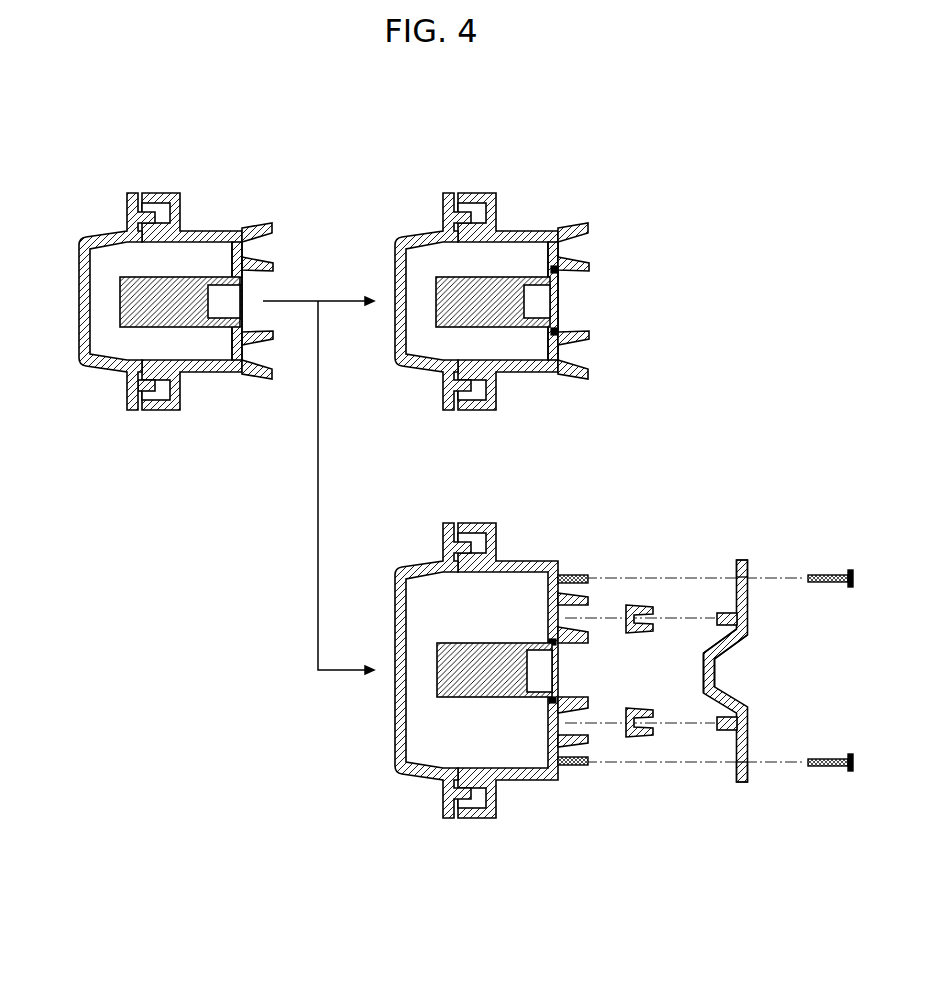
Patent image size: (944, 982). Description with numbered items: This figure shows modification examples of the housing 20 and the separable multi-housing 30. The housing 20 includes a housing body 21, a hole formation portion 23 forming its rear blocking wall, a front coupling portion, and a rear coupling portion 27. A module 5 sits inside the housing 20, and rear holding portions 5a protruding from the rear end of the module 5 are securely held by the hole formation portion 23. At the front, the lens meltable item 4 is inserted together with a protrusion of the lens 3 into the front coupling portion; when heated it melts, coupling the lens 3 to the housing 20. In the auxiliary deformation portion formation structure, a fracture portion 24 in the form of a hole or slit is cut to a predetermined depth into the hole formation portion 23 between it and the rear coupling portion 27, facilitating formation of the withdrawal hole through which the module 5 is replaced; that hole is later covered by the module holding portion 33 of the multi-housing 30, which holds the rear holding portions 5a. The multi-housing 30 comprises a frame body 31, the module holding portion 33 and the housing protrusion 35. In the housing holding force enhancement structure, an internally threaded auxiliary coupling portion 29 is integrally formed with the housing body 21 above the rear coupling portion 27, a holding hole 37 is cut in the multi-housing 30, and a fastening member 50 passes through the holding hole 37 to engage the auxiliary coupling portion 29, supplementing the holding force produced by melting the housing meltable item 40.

The lens 3 is at (95, 232).
The lens meltable item 4 is at (163, 404).
The module 5 is at (128, 312).
The rear holding portions 5a is at (212, 278).
The housing 20 is at (217, 367).
The housing body 21 is at (520, 230).
The hole formation portion 23 is at (242, 293).
The fracture portion 24 is at (560, 267).
The rear coupling portion 27 is at (573, 227).
The auxiliary coupling portion 29 is at (588, 578).
The multi-housing 30 is at (776, 687).
The frame body 31 is at (748, 632).
The module holding portion 33 is at (715, 667).
The housing protrusion 35 is at (725, 612).
The holding hole 37 is at (748, 577).
The housing meltable item 40 is at (655, 738).
The fastening member 50 is at (830, 577).